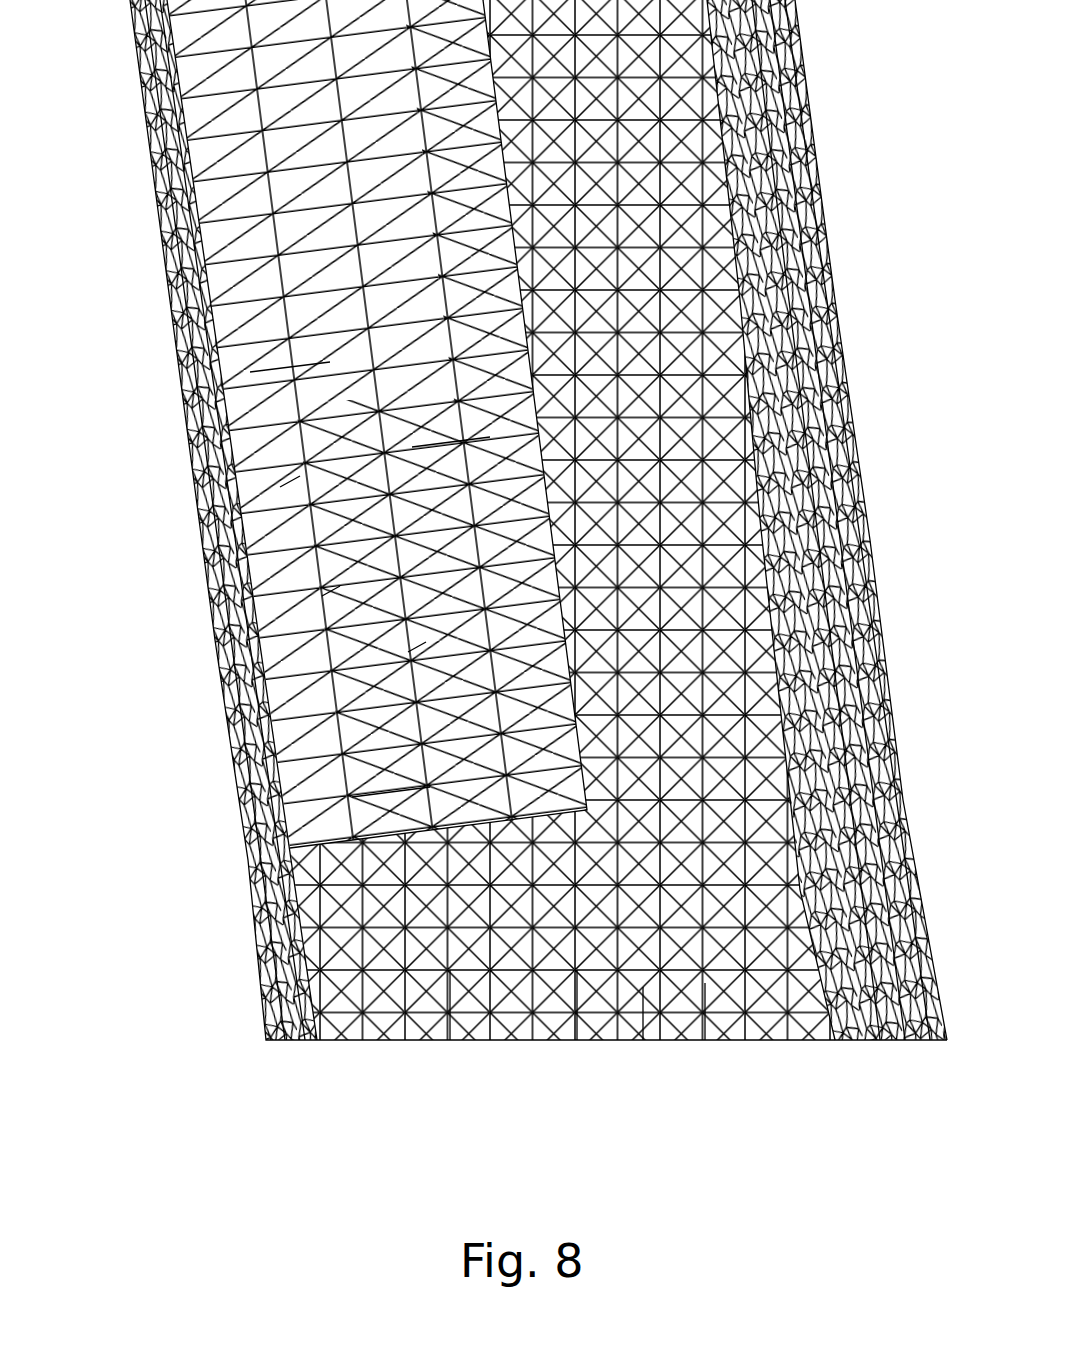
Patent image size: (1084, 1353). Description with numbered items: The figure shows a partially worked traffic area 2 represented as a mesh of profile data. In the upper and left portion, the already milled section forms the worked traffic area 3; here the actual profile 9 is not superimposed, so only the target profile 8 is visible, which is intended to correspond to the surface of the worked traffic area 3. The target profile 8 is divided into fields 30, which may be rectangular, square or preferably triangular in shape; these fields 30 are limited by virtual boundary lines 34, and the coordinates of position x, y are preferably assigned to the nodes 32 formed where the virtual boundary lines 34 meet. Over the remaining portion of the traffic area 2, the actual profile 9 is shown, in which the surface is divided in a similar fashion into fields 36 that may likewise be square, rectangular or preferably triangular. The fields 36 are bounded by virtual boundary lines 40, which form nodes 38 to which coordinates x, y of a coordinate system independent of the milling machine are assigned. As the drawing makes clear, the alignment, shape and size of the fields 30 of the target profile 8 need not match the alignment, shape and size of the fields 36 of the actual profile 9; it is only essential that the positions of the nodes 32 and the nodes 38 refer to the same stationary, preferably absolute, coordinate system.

The traffic area 2 is at (782, 628).
The worked traffic area 3 is at (257, 432).
The target profile 8 is at (128, 273).
The actual profile 9 is at (886, 265).
The fields 30 is at (245, 376).
The nodes 32 is at (408, 652).
The virtual boundary lines 34 is at (280, 487).
The fields 36 is at (745, 614).
The nodes 38 is at (577, 970).
The virtual boundary lines 40 is at (705, 983).